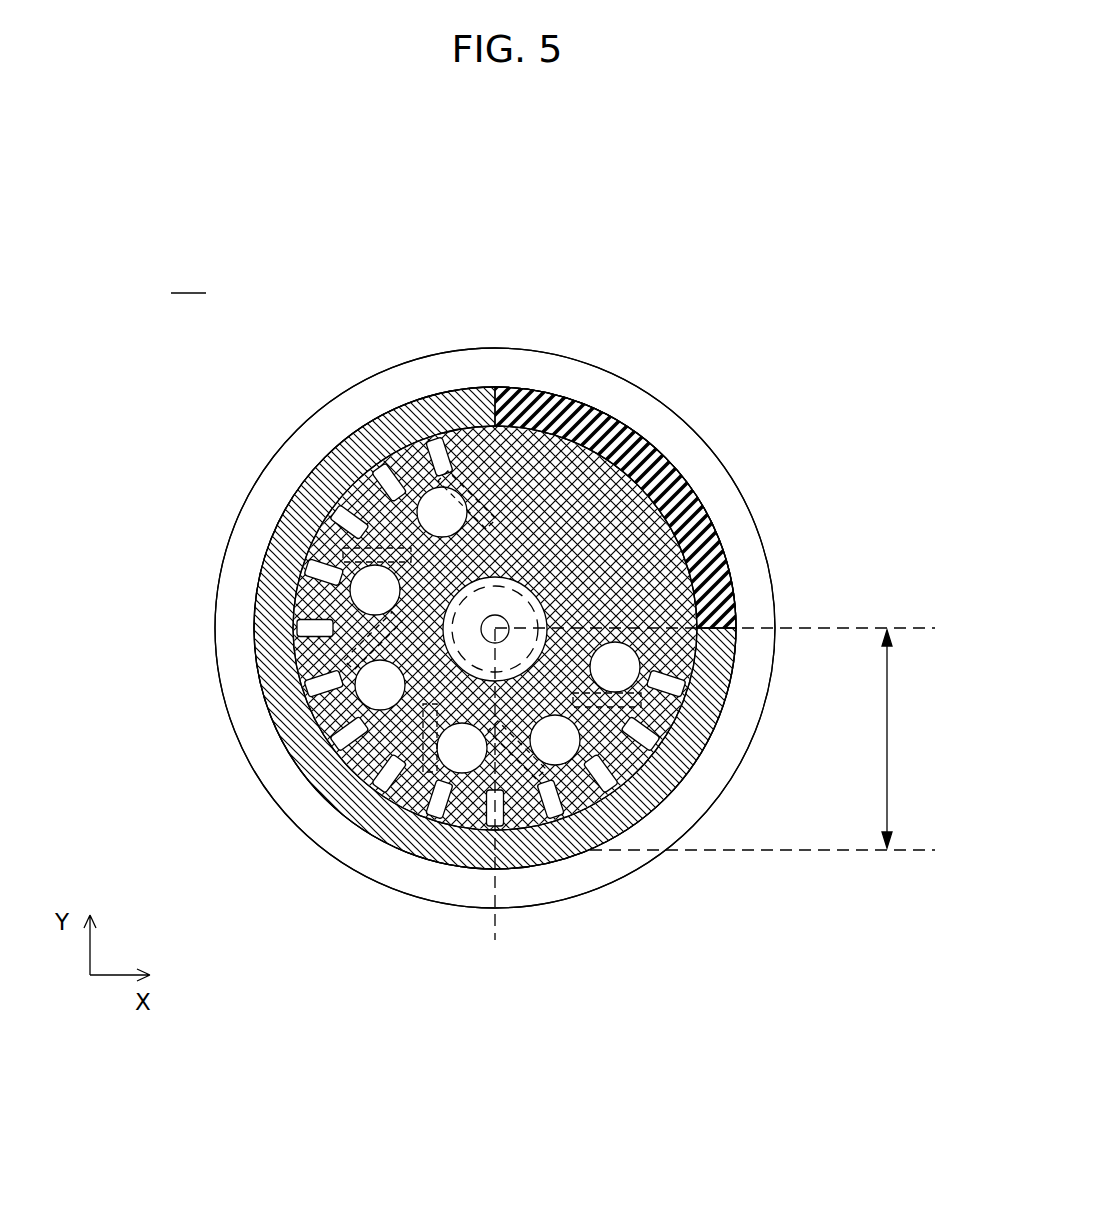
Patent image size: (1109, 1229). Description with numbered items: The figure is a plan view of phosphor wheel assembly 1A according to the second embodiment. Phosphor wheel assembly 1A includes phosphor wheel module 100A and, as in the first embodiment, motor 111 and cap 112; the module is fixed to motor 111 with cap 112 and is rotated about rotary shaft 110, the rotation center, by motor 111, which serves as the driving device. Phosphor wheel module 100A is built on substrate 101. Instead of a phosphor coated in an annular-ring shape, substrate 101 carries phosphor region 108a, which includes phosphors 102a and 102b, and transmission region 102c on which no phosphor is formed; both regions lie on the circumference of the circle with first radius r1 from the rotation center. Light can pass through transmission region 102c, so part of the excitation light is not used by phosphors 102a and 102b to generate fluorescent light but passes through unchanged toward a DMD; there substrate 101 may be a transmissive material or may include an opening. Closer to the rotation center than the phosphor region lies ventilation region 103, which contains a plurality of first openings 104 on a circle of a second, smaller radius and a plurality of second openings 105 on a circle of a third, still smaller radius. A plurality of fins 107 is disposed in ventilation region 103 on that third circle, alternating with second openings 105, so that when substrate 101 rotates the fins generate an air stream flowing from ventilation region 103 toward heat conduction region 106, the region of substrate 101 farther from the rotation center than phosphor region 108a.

The phosphor wheel assembly 1A is at (188, 280).
The phosphor wheel module 100A is at (575, 338).
The substrate 101 is at (215, 604).
The phosphor 102a is at (295, 493).
The phosphor 102b is at (660, 772).
The transmission region 102c is at (708, 607).
The ventilation region 103 is at (424, 493).
The first openings 104 is at (318, 634).
The second openings 105 is at (460, 756).
The heat conduction region 106 is at (253, 533).
The fins 107 is at (642, 695).
The phosphor region 108a is at (352, 450).
The rotary shaft 110 is at (505, 618).
The motor 111 is at (538, 598).
The cap 112 is at (546, 618).
The first radius r1 is at (762, 740).